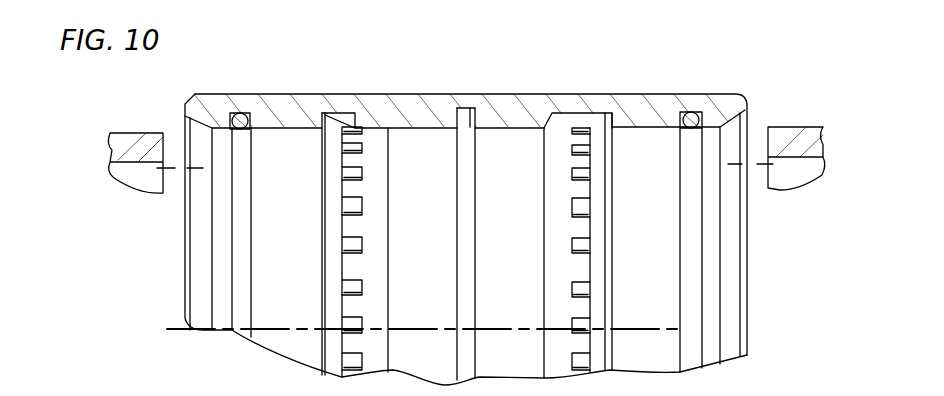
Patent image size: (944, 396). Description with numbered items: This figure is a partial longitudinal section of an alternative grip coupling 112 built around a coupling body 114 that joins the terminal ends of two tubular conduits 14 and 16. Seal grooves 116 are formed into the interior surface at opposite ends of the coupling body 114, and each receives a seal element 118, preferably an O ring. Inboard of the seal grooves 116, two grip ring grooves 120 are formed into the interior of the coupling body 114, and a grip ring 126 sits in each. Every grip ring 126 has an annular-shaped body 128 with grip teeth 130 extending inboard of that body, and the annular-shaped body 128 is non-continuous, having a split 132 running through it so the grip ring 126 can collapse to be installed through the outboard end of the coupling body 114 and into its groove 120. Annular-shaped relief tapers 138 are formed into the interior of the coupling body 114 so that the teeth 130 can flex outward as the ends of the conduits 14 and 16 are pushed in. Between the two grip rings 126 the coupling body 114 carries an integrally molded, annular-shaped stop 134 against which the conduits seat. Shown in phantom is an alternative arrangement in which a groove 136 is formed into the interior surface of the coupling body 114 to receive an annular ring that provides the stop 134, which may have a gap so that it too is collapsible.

The tubular conduit 14 is at (123, 140).
The tubular conduit 16 is at (806, 133).
The grip coupling 112 is at (471, 211).
The coupling body 114 is at (288, 103).
The seal groove 116 is at (241, 128).
The seal element 118 is at (240, 116).
The grip ring groove 120 is at (325, 120).
The grip ring 126 is at (328, 232).
The annular-shaped body 128 is at (336, 180).
The grip teeth 130 is at (381, 168).
The split 132 is at (334, 323).
The stop 134 is at (458, 135).
The groove 136 is at (470, 108).
The relief taper 138 is at (383, 132).